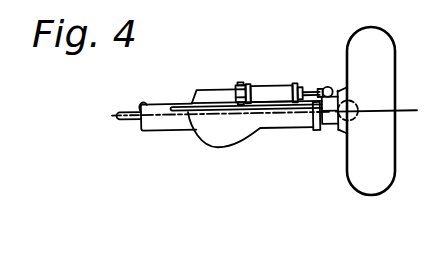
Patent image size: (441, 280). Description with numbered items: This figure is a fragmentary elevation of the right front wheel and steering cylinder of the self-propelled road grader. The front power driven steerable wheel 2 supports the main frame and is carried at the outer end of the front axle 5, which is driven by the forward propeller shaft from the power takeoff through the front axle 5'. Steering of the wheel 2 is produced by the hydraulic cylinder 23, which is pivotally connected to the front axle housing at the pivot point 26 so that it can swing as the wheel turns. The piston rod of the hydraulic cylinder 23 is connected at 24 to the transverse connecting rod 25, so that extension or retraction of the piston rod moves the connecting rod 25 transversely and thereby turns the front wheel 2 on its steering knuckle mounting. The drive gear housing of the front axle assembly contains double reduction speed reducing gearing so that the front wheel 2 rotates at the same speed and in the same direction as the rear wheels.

The front power driven steerable wheel 2 is at (395, 70).
The front axle 5 is at (264, 125).
The front axle 5' is at (115, 101).
The hydraulic cylinder 23 is at (267, 85).
The piston rod connection 24 is at (330, 88).
The transverse connecting rod 25 is at (175, 113).
The pivot point 26 is at (240, 83).